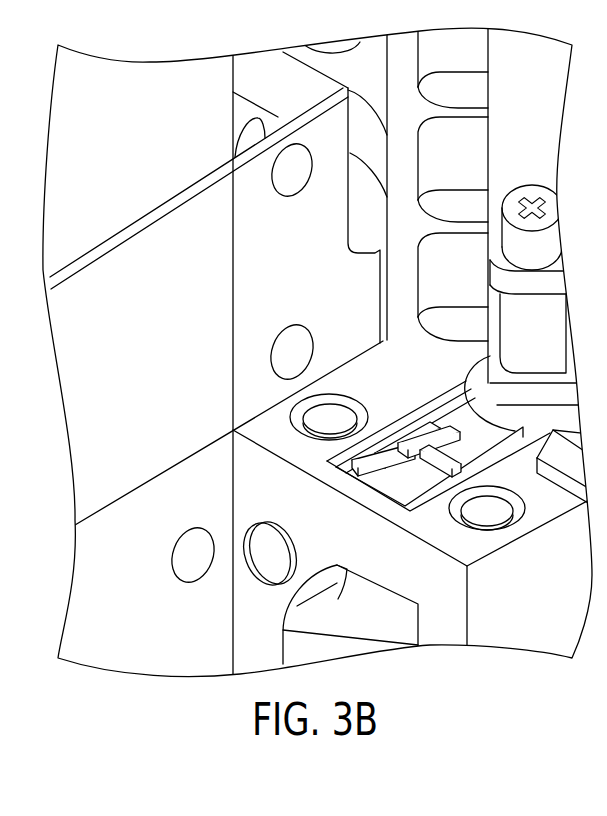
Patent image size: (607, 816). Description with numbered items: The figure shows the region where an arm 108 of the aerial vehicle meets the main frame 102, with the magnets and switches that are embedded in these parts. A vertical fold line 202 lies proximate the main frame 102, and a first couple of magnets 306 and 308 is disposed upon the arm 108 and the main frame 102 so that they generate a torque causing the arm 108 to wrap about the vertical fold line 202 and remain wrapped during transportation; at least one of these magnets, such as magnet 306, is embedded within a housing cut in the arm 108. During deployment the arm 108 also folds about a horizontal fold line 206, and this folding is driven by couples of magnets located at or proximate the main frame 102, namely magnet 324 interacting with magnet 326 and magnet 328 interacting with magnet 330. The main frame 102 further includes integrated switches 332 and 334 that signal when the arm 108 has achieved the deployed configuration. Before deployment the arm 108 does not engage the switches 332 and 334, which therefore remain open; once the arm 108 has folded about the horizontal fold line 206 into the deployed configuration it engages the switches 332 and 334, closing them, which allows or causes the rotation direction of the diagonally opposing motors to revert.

The main frame 102 is at (537, 580).
The arm 108 is at (107, 262).
The vertical fold line 202 is at (233, 216).
The horizontal fold line 206 is at (140, 480).
The magnet 306 is at (185, 563).
The magnet 308 is at (268, 541).
The magnet 324 is at (295, 157).
The magnet 326 is at (480, 511).
The magnet 328 is at (280, 362).
The magnet 330 is at (317, 420).
The switch 332 is at (392, 466).
The switch 334 is at (427, 398).